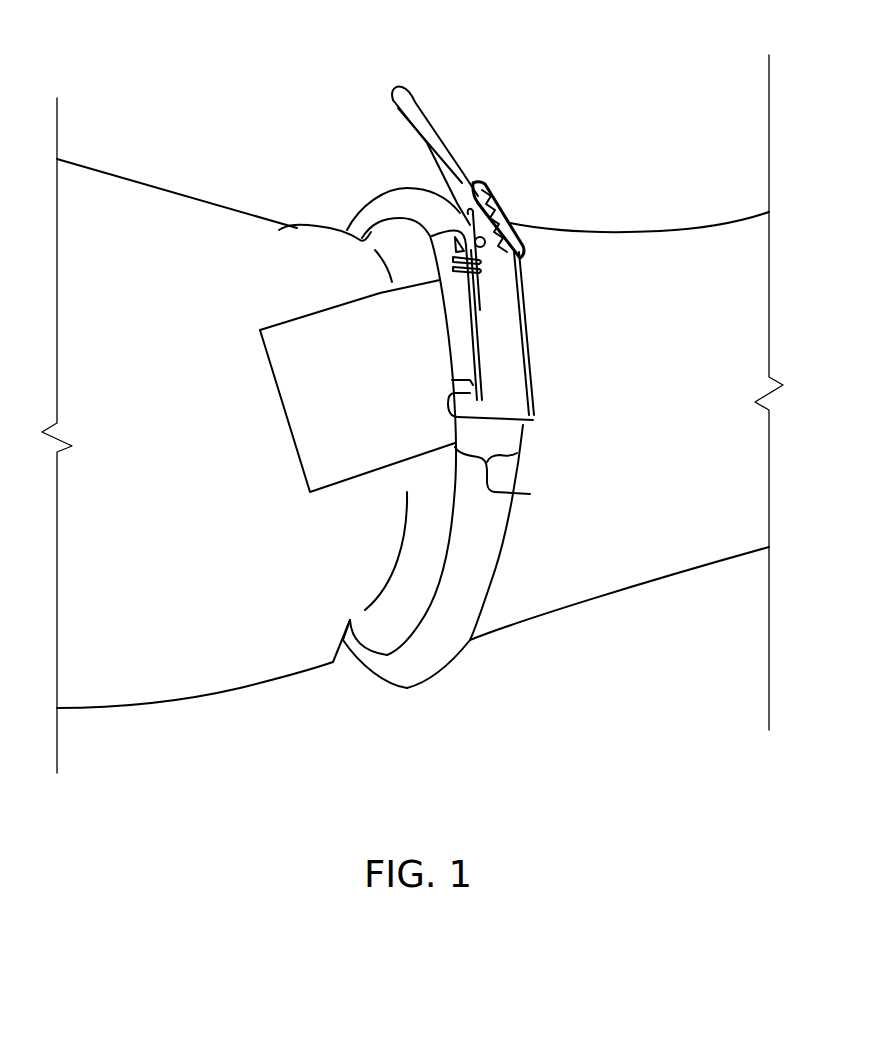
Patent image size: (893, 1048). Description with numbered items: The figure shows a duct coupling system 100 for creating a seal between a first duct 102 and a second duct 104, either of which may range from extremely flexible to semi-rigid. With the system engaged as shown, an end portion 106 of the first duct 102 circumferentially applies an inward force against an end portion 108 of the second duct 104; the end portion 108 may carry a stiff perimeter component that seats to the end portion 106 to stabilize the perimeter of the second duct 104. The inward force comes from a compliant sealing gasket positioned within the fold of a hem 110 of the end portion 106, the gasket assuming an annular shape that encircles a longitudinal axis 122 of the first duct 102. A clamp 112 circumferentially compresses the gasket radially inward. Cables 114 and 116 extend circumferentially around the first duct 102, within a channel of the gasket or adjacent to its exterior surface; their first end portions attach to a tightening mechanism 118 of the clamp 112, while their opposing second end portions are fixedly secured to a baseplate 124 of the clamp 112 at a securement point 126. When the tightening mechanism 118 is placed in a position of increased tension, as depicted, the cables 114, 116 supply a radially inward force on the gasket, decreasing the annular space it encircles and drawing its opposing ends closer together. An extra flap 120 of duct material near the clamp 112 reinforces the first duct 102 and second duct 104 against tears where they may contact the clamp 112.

The duct coupling system 100 is at (165, 67).
The first duct 102 is at (588, 450).
The second duct 104 is at (214, 433).
The end portion of the first duct 106 is at (487, 511).
The end portion of the second duct 108 is at (423, 537).
The hem 110 is at (530, 494).
The clamp 112 is at (538, 310).
The cable 114 is at (533, 372).
The cable 116 is at (452, 380).
The tightening mechanism 118 is at (467, 170).
The extra flap 120 is at (333, 378).
The longitudinal axis 122 is at (100, 431).
The baseplate 124 is at (463, 295).
The securement point 126 is at (520, 290).